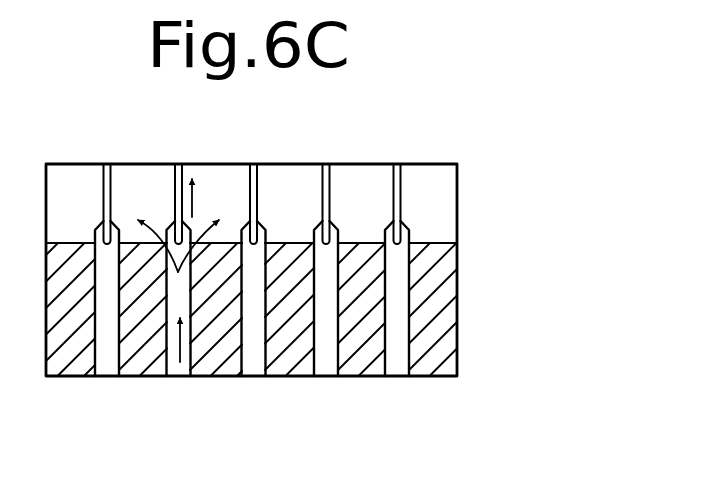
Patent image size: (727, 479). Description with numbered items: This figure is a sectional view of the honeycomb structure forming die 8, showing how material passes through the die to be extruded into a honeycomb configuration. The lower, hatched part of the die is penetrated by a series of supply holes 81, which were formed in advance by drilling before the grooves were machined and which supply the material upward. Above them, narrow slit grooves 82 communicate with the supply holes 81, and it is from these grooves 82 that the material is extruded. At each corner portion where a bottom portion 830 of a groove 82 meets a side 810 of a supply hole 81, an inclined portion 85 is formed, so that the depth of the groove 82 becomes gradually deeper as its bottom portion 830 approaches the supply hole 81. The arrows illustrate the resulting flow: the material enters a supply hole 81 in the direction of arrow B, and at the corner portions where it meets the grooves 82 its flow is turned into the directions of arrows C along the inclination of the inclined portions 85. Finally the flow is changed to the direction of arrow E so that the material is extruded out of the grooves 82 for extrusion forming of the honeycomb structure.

The honeycomb structure forming die 8 is at (463, 146).
The supply hole 81 is at (257, 358).
The side of supply hole 810 is at (328, 350).
The groove 82 is at (397, 163).
The bottom portion of groove 830 is at (282, 242).
The inclined portion 85 is at (118, 236).
The arrow E is at (198, 204).
The arrow B is at (165, 343).
The arrow C is at (180, 229).